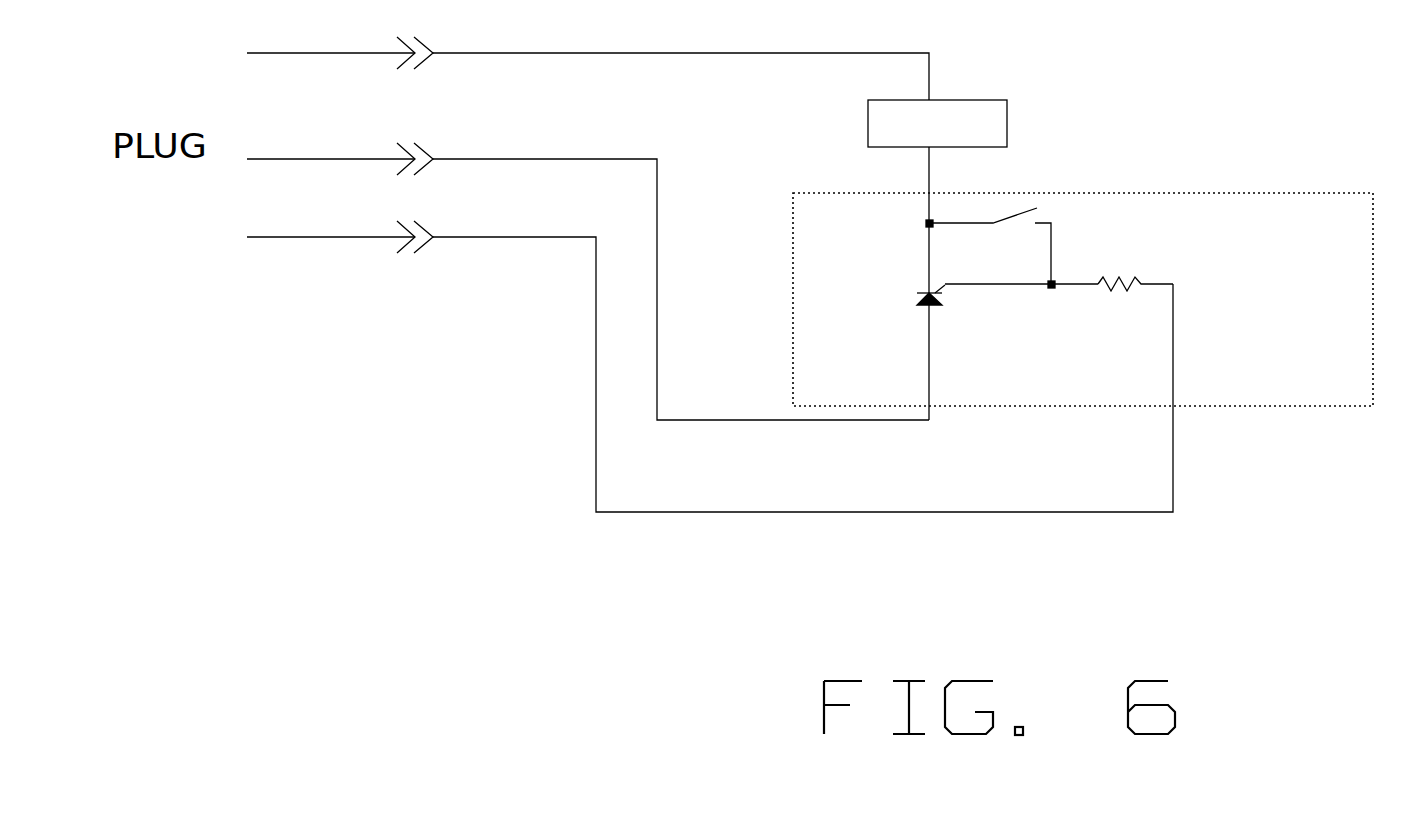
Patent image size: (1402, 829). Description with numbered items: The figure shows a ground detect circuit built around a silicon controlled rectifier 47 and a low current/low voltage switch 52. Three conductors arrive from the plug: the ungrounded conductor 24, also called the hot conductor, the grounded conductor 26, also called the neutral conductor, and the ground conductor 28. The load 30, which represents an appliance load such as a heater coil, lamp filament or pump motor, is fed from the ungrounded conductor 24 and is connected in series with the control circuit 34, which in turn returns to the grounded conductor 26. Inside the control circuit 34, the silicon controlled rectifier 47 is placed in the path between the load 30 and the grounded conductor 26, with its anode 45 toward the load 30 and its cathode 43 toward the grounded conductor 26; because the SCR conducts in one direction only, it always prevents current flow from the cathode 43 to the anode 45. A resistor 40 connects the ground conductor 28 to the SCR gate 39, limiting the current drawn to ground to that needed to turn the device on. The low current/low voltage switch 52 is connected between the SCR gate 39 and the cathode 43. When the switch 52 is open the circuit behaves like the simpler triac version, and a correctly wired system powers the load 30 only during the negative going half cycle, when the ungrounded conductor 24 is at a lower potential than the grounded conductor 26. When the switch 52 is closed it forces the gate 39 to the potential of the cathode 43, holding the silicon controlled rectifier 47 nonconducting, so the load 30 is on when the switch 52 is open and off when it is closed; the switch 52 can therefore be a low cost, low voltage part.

The ungrounded conductor 24 is at (552, 38).
The grounded conductor 26 is at (518, 145).
The ground conductor 28 is at (503, 222).
The load 30 is at (1020, 117).
The control circuit 34 is at (1203, 178).
The SCR gate 39 is at (990, 298).
The resistor 40 is at (1112, 270).
The cathode 43 is at (912, 253).
The anode 45 is at (912, 344).
The silicon controlled rectifier 47 is at (913, 297).
The low current/low voltage switch 52 is at (1005, 223).